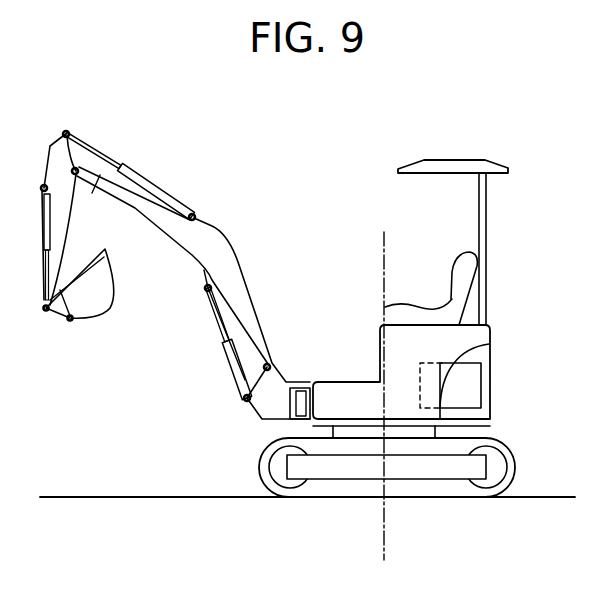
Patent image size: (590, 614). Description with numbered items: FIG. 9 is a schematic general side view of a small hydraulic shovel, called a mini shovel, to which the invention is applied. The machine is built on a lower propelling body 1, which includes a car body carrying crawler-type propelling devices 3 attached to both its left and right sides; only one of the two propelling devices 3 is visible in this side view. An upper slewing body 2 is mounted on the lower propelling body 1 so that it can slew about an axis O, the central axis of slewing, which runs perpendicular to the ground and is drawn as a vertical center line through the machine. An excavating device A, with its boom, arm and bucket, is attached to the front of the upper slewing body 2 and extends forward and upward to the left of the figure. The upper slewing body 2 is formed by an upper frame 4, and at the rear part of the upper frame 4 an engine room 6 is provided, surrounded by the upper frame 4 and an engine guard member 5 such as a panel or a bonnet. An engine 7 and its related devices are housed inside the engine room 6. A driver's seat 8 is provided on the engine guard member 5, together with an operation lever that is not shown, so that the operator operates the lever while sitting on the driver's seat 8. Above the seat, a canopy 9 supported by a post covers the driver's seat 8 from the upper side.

The lower propelling body 1 is at (432, 500).
The upper slewing body 2 is at (494, 300).
The crawler-type propelling device 3 is at (259, 465).
The upper frame 4 is at (352, 427).
The engine guard member 5 is at (492, 339).
The engine room 6 is at (491, 398).
The engine 7 is at (481, 375).
The driver's seat 8 is at (456, 263).
The canopy 9 is at (468, 158).
The excavating device A is at (220, 229).
The axis O is at (380, 380).